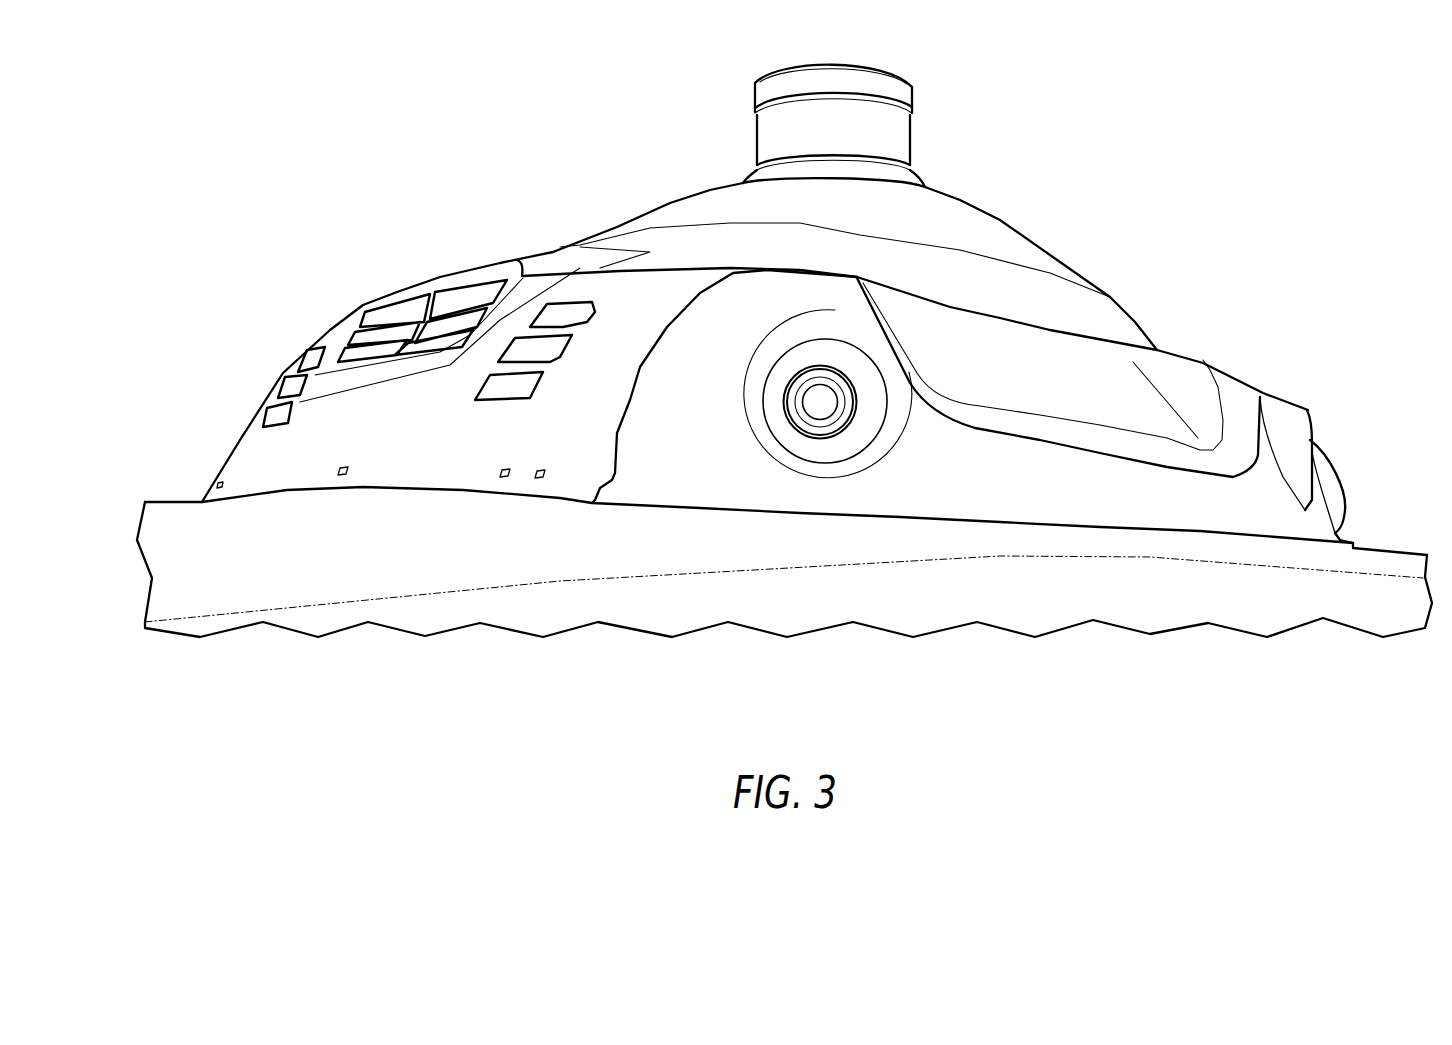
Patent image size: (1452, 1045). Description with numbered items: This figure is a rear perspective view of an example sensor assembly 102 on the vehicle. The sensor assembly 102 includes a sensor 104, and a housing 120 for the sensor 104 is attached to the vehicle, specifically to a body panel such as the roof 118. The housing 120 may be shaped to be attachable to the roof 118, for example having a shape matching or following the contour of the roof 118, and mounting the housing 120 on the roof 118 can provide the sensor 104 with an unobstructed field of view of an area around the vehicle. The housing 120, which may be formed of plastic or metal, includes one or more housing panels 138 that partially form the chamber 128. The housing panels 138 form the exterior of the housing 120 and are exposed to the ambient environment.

The sensor assembly 102 is at (1175, 160).
The sensor 104 is at (827, 408).
The roof 118 is at (488, 558).
The housing 120 is at (975, 230).
The chamber 128 is at (715, 340).
The housing panels 138 is at (1087, 488).